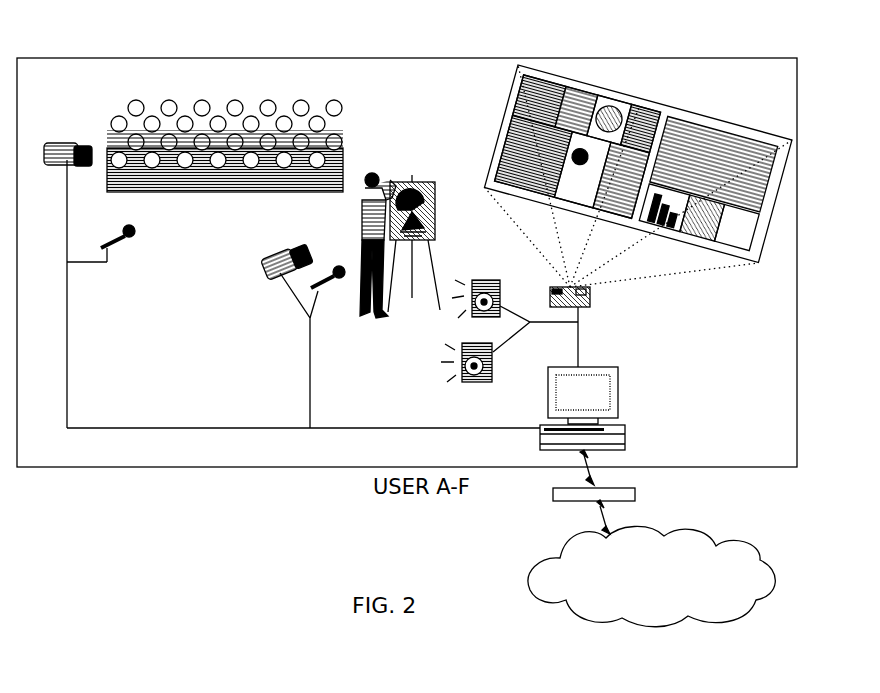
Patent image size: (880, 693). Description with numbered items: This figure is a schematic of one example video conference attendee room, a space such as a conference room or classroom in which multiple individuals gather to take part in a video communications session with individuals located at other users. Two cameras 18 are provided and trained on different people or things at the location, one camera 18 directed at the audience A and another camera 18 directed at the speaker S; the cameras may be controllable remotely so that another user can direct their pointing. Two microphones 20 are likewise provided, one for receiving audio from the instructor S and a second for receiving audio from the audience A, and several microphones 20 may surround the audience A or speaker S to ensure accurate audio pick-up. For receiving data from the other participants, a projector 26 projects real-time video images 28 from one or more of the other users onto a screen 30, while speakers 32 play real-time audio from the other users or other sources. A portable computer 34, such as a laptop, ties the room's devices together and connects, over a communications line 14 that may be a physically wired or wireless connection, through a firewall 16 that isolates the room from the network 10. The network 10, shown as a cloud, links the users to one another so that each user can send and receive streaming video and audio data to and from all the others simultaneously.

The audience A is at (183, 92).
The speaker S is at (374, 154).
The camera 18 is at (70, 138).
The microphone 20 is at (118, 228).
The projector 26 is at (590, 300).
The real-time video images 28 is at (500, 116).
The screen 30 is at (728, 118).
The speaker 32 is at (505, 300).
The portable computer 34 is at (626, 428).
The communications line 14 is at (600, 482).
The firewall 16 is at (553, 494).
The network 10 is at (733, 540).